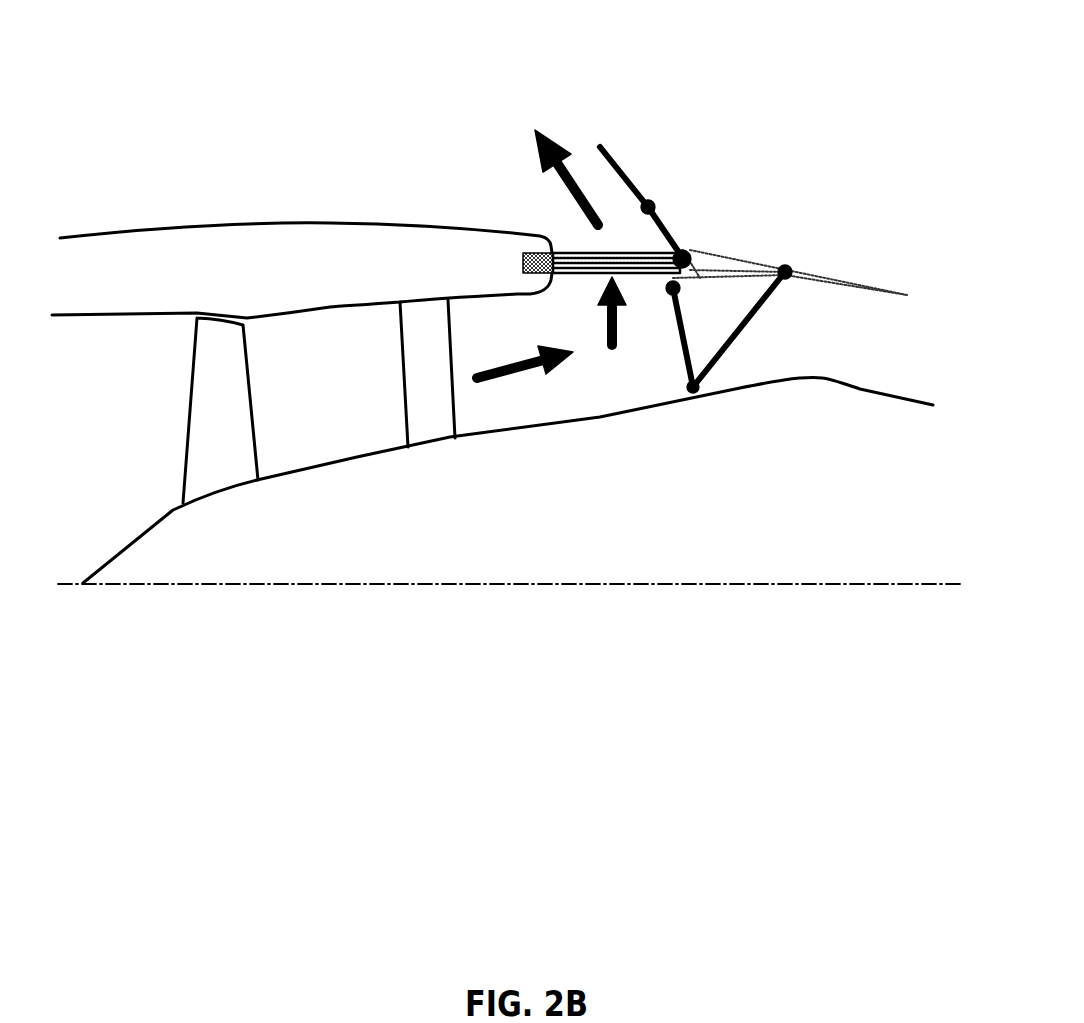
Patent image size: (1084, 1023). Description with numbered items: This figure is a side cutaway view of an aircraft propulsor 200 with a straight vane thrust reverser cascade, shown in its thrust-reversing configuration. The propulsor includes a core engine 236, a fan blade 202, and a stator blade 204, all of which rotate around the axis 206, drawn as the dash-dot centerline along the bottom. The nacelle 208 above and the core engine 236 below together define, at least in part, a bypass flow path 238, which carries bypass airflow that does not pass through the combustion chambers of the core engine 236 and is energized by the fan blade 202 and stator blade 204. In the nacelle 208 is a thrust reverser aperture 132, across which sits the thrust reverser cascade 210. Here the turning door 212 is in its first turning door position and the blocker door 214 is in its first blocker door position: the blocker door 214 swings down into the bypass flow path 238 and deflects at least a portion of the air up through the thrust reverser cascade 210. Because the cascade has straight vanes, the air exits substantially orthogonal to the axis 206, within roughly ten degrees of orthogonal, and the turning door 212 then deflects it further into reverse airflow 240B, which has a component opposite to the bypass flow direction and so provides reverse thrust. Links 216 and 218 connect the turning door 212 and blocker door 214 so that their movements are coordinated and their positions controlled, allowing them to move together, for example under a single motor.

The aircraft propulsor 200 is at (140, 153).
The fan blade 202 is at (187, 392).
The stator blade 204 is at (457, 417).
The axis 206 is at (367, 585).
The nacelle 208 is at (315, 223).
The thrust reverser cascade 210 is at (570, 252).
The turning door 212 is at (627, 173).
The blocker door 214 is at (683, 368).
The link 216 is at (667, 228).
The link 218 is at (733, 337).
The core engine 236 is at (157, 520).
The bypass flow path 238 is at (325, 407).
The thrust reverser aperture 132 is at (612, 245).
The reverse airflow 240B is at (547, 159).